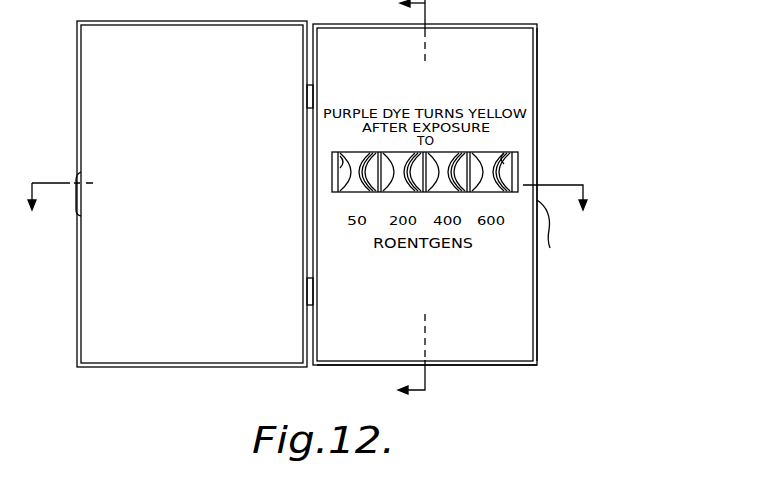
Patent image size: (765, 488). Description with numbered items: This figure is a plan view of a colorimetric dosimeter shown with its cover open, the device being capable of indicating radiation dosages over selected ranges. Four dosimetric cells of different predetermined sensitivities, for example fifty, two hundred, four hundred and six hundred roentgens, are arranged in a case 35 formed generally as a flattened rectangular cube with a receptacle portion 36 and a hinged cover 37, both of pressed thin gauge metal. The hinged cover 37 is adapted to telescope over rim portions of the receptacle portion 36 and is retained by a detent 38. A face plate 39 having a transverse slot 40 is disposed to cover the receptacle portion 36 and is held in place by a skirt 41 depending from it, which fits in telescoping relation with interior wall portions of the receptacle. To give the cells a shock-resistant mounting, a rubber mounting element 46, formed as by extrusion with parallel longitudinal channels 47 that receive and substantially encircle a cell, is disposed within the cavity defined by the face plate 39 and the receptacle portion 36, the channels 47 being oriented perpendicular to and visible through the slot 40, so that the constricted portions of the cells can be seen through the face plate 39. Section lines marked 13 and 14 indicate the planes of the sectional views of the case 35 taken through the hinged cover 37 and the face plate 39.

The section line 13- 13 is at (307, 207).
The section line 14- 14 is at (400, 201).
The case 35 is at (474, 200).
The receptacle portion 36 is at (535, 352).
The hinged cover 37 is at (102, 304).
The detent 38 is at (555, 233).
The face plate 39 is at (523, 70).
The transverse slot 40 is at (507, 163).
The skirt 41 is at (538, 115).
The rubber mounting element 46 is at (336, 176).
The longitudinal channels 47 is at (338, 167).